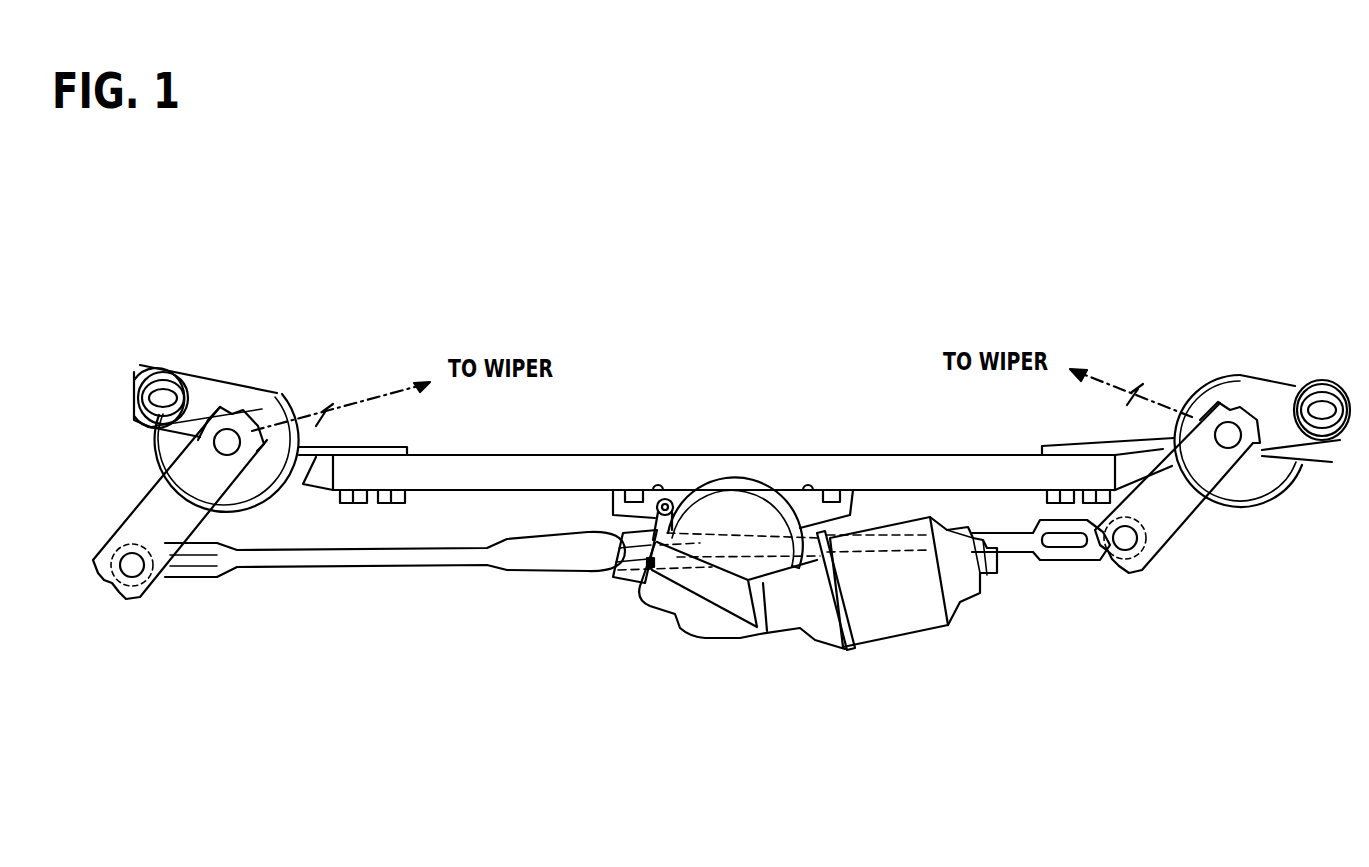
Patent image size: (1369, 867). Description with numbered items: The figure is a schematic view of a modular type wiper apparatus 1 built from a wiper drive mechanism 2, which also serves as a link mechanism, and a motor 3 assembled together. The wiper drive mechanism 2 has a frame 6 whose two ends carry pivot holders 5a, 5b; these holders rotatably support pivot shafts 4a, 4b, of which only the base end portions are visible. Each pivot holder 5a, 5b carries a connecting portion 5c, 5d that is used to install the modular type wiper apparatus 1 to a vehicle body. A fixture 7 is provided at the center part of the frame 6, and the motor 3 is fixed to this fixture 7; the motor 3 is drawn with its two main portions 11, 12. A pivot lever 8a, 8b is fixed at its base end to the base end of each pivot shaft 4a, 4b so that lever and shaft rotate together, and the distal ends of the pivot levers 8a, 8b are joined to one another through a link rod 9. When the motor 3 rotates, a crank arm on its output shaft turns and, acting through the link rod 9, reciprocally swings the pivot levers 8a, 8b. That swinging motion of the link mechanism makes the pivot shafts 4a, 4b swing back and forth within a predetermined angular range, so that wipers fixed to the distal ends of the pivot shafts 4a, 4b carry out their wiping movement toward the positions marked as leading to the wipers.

The modular type wiper apparatus 1 is at (898, 378).
The wiper drive mechanism 2 is at (257, 391).
The motor 3 is at (847, 710).
The pivot shaft 4a is at (198, 438).
The pivot shaft 4b is at (1231, 437).
The pivot holder 5a is at (213, 373).
The pivot holder 5b is at (1207, 382).
The connecting portion 5c is at (150, 372).
The connecting portion 5d is at (1333, 380).
The frame 6 is at (485, 462).
The fixture 7 is at (818, 493).
The pivot lever 8a is at (130, 513).
The pivot lever 8b is at (1185, 527).
The link rod 9 is at (328, 567).
The motor main body 11 is at (862, 648).
The speed reduction gear housing 12 is at (757, 647).